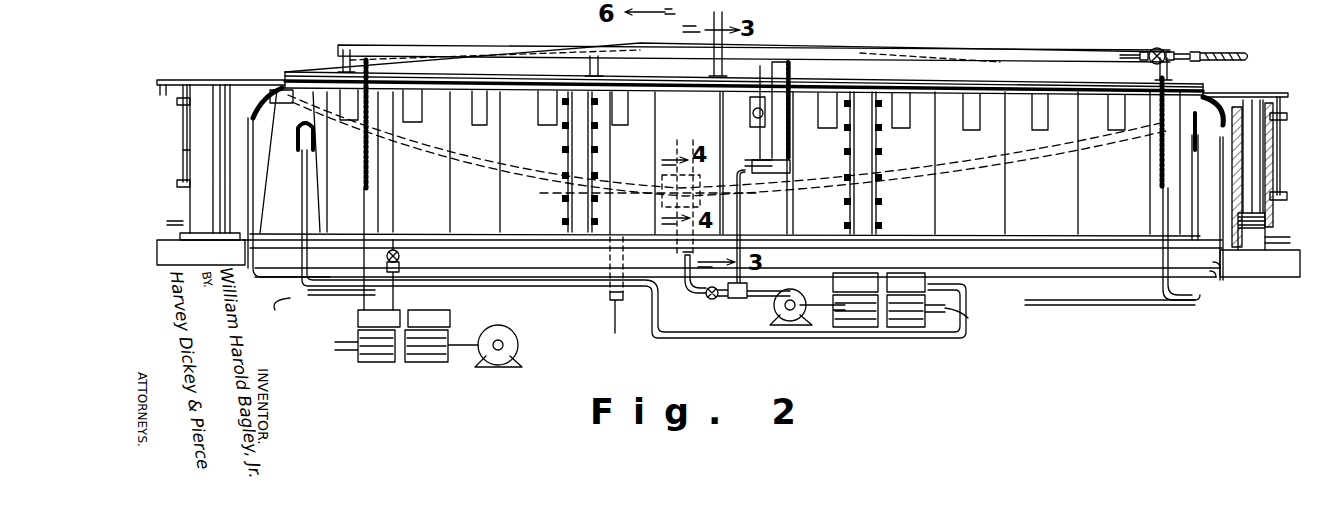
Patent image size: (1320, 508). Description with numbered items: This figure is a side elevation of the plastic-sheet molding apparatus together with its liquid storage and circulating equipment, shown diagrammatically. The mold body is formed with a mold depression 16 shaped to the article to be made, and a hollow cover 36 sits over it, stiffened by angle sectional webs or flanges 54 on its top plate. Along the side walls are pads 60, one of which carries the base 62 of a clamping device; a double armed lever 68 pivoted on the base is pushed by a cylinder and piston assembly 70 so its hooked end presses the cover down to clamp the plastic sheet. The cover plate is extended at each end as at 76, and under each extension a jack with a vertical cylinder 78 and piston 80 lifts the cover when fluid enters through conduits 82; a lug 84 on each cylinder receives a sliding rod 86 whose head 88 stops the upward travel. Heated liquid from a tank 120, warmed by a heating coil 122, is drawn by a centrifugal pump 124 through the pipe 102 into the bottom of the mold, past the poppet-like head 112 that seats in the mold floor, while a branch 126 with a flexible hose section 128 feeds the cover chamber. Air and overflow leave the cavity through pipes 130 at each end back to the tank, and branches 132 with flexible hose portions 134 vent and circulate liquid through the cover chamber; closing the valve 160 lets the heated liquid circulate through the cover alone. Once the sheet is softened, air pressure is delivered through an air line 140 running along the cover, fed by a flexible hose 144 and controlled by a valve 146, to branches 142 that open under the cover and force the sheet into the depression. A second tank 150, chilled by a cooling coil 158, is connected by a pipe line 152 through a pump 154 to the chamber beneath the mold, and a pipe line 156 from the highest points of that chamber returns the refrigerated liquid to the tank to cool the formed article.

The mold depression 16 is at (619, 167).
The cover 36 is at (976, 70).
The angle sectional webs or flanges 54 is at (440, 60).
The pads 60 is at (972, 131).
The base 62 is at (757, 128).
The double armed lever 68 is at (775, 62).
The cylinder and piston assembly 70 is at (750, 114).
The extended end of plate member 76 is at (1262, 93).
The cylinder 78 is at (1266, 134).
The piston 80 is at (1282, 119).
The conduits 82 is at (1288, 237).
The lug 84 is at (178, 105).
The rod 86 is at (183, 153).
The head 88 is at (177, 186).
The pipe 102 is at (690, 295).
The head 112 is at (662, 186).
The tank 120 is at (912, 330).
The heating coil 122 is at (960, 334).
The centrifugal pump 124 is at (784, 317).
The branch 126 is at (742, 213).
The flexible hose section 128 is at (792, 117).
The pipe 130 is at (1210, 100).
The branches 132 is at (1190, 216).
The flexible hose portions 134 is at (1160, 150).
The air line 140 is at (966, 50).
The branches 142 is at (1160, 68).
The flexible hose 144 is at (1200, 53).
The valve 146 is at (1158, 48).
The tank 150 is at (500, 333).
The pipe line 152 is at (562, 333).
The pump 154 is at (510, 328).
The pipe line 156 is at (300, 313).
The cooling coil 158 is at (385, 362).
The valve 160 is at (712, 300).